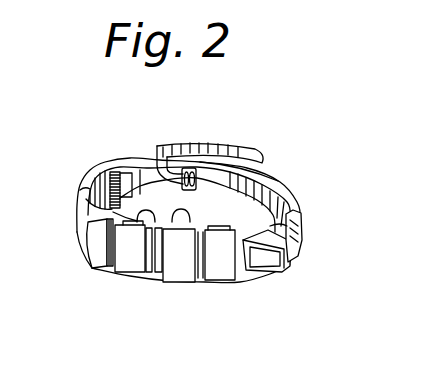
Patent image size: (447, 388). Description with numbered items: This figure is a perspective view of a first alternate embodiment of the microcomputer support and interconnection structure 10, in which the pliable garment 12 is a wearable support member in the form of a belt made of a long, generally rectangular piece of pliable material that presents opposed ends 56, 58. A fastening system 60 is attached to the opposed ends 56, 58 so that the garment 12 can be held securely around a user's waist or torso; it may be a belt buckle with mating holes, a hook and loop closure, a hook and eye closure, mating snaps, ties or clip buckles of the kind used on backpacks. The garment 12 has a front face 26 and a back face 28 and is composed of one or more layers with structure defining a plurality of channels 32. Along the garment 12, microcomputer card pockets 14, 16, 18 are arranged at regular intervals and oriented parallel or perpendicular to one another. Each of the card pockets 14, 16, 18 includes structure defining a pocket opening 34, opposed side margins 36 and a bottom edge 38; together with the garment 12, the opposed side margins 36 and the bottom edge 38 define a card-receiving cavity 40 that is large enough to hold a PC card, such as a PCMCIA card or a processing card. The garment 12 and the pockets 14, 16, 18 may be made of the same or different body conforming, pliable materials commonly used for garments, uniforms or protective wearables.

The microcomputer support and interconnection structure 10 is at (352, 183).
The pliable garment 12 is at (300, 193).
The microcomputer card pocket 14 is at (262, 270).
The microcomputer card pocket 16 is at (292, 258).
The microcomputer card pocket 18 is at (226, 278).
The front face 26 is at (82, 238).
The back face 28 is at (112, 173).
The channel 32 is at (160, 268).
The pocket opening 34 is at (193, 204).
The opposed side margins 36 is at (173, 263).
The bottom edge 38 is at (184, 270).
The card-receiving cavity 40 is at (80, 200).
The opposed end 56 is at (262, 147).
The opposed end 58 is at (276, 170).
The fastening system 60 is at (193, 168).